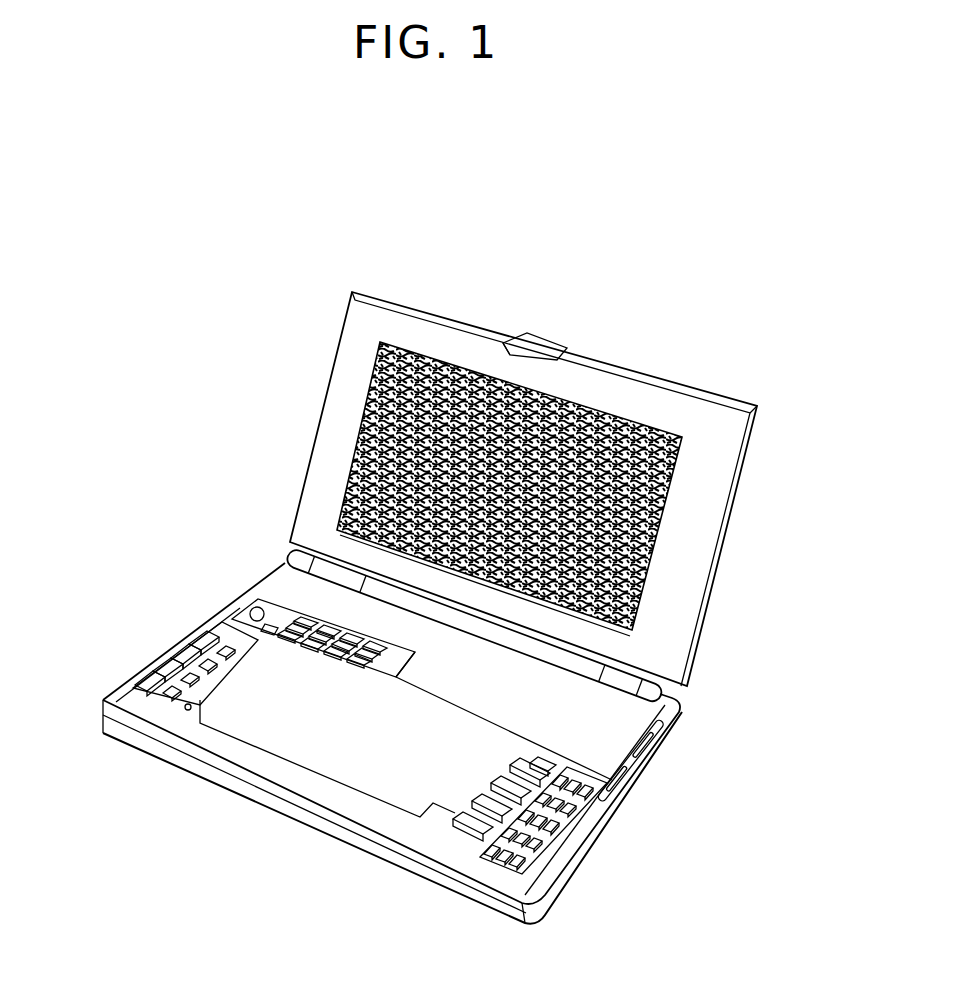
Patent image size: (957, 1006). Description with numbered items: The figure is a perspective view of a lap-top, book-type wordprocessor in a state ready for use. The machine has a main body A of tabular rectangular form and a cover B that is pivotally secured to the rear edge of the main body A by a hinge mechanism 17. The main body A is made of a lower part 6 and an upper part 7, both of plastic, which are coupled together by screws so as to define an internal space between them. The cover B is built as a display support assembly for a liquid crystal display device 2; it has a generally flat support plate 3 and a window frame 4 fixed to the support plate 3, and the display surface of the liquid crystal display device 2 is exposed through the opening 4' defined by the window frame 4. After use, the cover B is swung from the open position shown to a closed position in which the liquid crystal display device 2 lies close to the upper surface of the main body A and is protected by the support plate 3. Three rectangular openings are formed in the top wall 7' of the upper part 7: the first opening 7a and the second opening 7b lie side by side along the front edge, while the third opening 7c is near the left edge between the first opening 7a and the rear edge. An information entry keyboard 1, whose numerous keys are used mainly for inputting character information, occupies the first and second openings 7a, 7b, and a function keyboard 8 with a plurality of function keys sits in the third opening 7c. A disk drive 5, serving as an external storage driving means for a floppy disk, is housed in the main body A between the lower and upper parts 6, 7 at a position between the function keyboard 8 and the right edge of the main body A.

The information entry keyboard 1 is at (508, 868).
The liquid crystal display device 2 is at (611, 413).
The support plate 3 is at (745, 455).
The window frame 4 is at (639, 380).
The opening 4' is at (558, 585).
The disk drive 5 is at (640, 780).
The lower part 6 is at (540, 899).
The upper part 7 is at (430, 751).
The top wall 7' is at (543, 710).
The first opening 7a is at (268, 745).
The second opening 7b is at (518, 880).
The third opening 7c is at (410, 652).
The function keyboard 8 is at (302, 617).
The hinge mechanism 17 is at (280, 547).
The main body A is at (181, 633).
The cover B is at (318, 390).